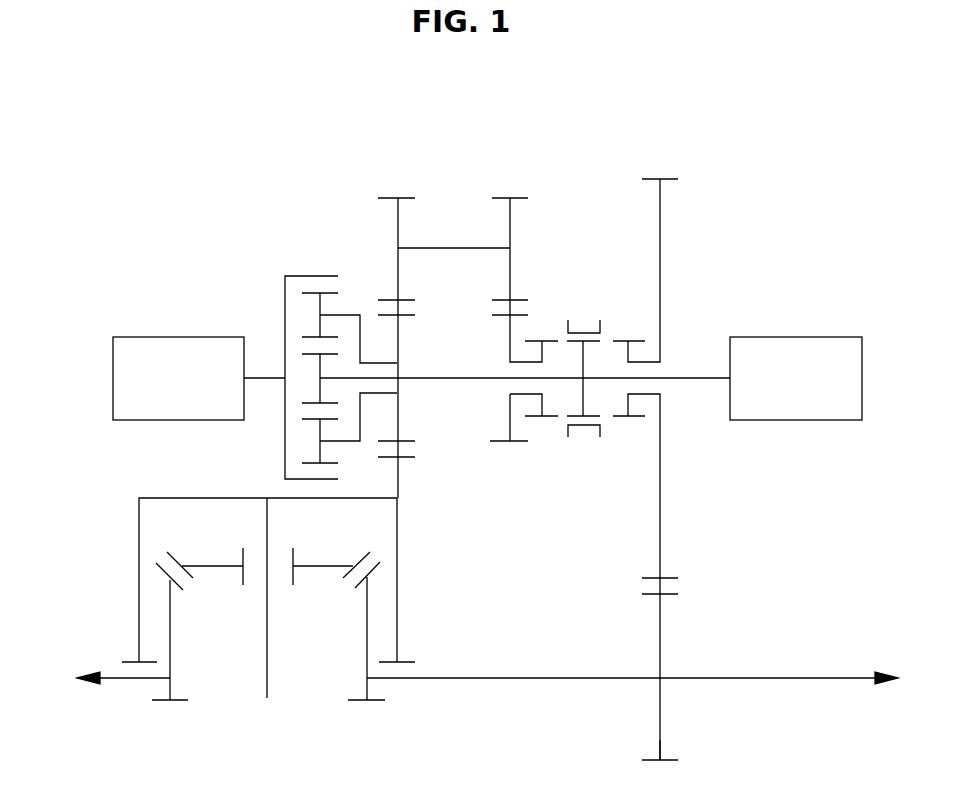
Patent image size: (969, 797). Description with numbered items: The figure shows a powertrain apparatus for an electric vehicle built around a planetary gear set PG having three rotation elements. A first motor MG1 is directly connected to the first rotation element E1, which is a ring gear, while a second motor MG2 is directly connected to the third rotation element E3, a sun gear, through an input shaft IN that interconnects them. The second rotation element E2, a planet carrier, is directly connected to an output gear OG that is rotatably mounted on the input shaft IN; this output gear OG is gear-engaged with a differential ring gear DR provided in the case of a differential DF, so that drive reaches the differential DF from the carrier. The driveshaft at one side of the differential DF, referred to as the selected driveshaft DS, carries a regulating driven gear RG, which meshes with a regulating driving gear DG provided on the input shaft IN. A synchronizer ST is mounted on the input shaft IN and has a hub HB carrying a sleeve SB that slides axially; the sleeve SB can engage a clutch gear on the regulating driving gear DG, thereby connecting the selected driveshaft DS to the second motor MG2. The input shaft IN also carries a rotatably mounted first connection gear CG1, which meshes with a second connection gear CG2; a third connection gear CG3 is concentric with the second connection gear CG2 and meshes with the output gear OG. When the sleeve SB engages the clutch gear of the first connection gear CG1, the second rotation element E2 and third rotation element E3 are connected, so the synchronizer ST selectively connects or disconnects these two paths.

The first motor MG1 is at (178, 378).
The second motor MG2 is at (796, 378).
The input shaft IN is at (695, 379).
The planetary gear set PG is at (257, 203).
The first rotation element E1 is at (317, 275).
The second rotation element E2 is at (318, 315).
The third rotation element E3 is at (305, 352).
The first connection gear CG1 is at (525, 315).
The second connection gear CG2 is at (503, 195).
The third connection gear CG3 is at (390, 195).
The output gear OG is at (380, 315).
The differential ring gear DR is at (413, 458).
The synchronizer ST is at (587, 312).
The hub HB is at (600, 338).
The sleeve SB is at (582, 438).
The regulating driving gear DG is at (678, 578).
The regulating driven gear RG is at (647, 760).
The differential DF is at (137, 539).
The selected driveshaft DS is at (781, 678).